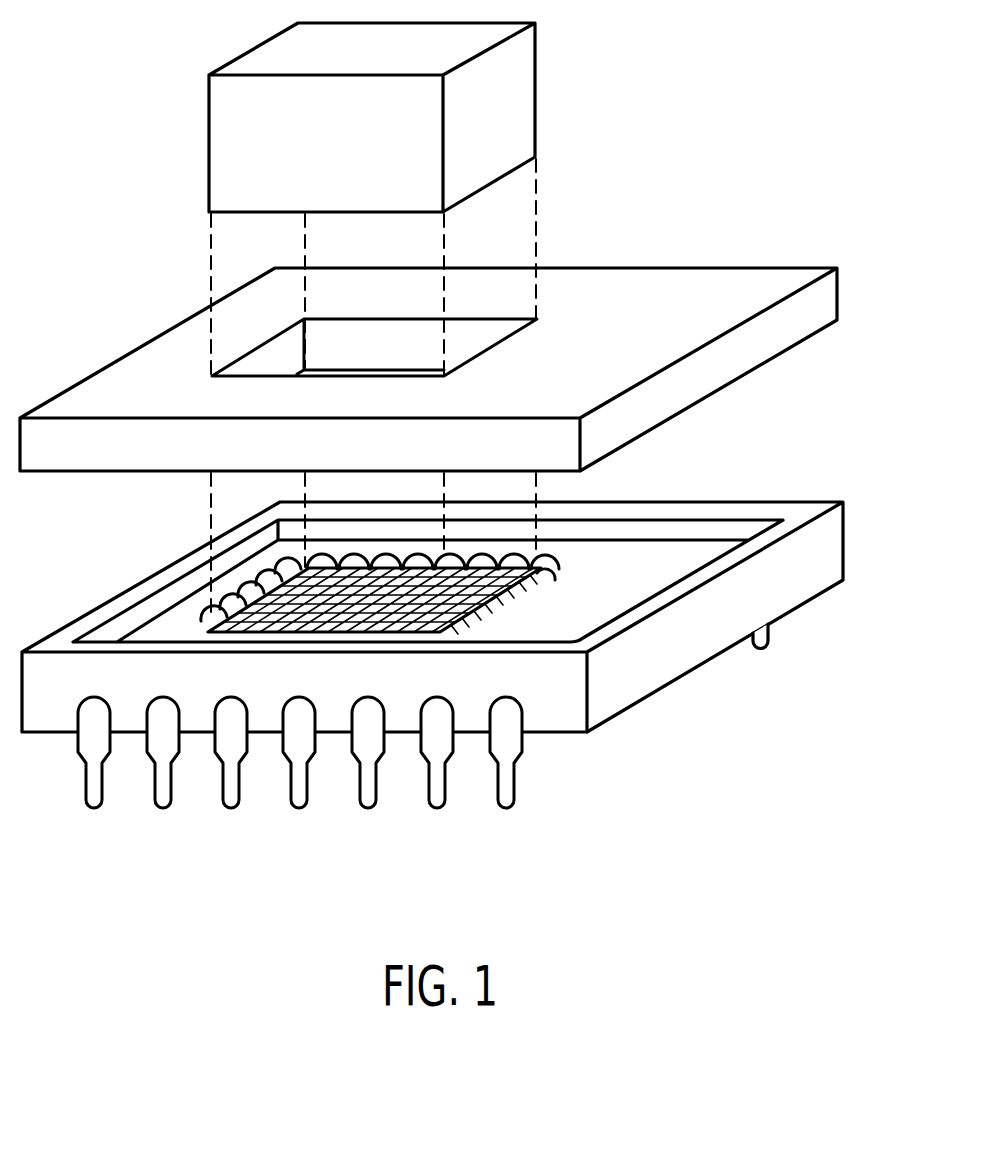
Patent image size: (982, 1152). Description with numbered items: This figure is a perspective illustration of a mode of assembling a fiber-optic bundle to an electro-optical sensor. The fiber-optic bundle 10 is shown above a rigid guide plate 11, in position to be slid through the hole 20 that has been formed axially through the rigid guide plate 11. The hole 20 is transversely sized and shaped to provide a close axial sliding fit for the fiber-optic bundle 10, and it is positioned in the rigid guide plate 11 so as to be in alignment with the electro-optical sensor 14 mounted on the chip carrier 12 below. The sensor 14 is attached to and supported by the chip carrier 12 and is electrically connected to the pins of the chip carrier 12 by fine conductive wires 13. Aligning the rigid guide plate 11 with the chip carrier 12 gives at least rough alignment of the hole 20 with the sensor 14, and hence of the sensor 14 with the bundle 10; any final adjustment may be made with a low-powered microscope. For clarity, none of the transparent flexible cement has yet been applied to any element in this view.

The fiber-optic bundle 10 is at (514, 107).
The rigid guide plate 11 is at (823, 298).
The hole 20 is at (457, 338).
The chip carrier 12 is at (827, 542).
The fine conductive wires 13 is at (548, 565).
The electro-optical sensor 14 is at (385, 603).